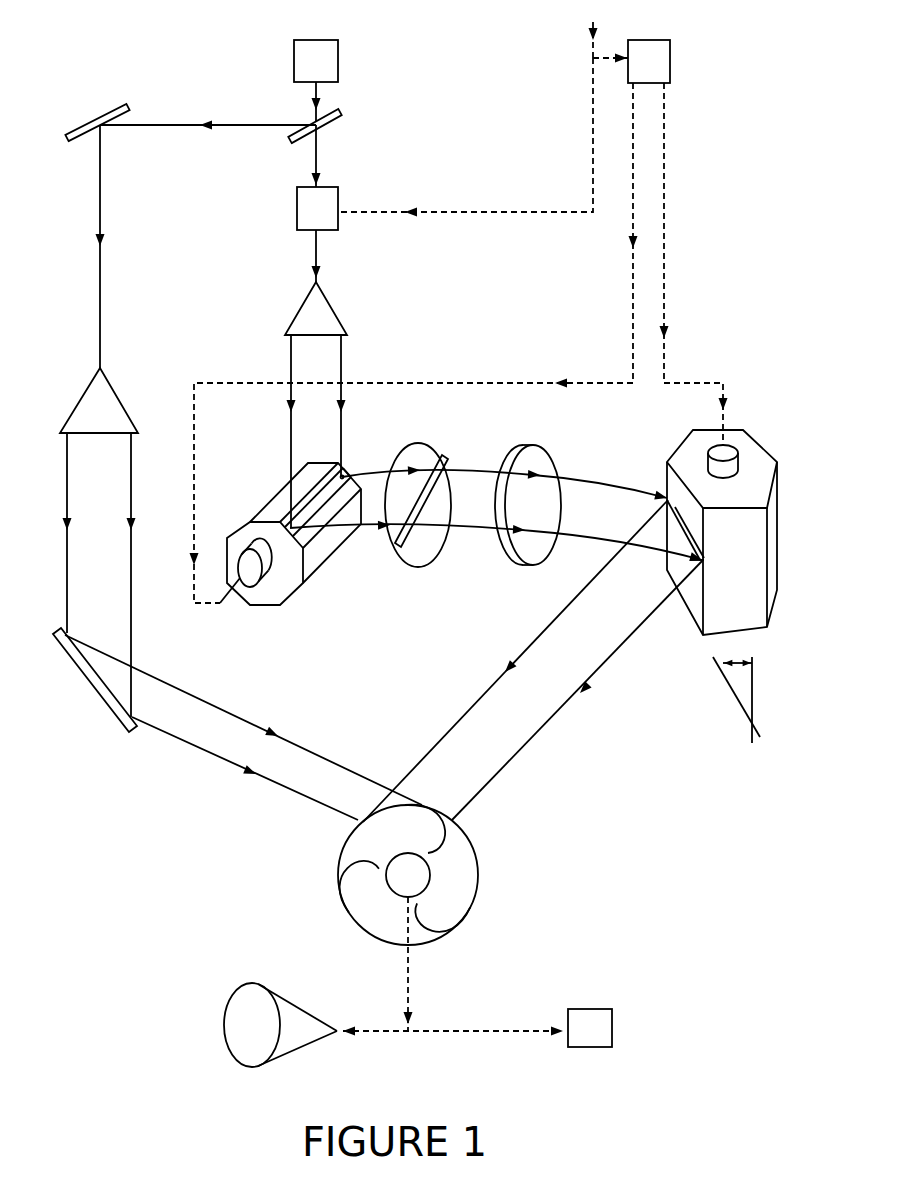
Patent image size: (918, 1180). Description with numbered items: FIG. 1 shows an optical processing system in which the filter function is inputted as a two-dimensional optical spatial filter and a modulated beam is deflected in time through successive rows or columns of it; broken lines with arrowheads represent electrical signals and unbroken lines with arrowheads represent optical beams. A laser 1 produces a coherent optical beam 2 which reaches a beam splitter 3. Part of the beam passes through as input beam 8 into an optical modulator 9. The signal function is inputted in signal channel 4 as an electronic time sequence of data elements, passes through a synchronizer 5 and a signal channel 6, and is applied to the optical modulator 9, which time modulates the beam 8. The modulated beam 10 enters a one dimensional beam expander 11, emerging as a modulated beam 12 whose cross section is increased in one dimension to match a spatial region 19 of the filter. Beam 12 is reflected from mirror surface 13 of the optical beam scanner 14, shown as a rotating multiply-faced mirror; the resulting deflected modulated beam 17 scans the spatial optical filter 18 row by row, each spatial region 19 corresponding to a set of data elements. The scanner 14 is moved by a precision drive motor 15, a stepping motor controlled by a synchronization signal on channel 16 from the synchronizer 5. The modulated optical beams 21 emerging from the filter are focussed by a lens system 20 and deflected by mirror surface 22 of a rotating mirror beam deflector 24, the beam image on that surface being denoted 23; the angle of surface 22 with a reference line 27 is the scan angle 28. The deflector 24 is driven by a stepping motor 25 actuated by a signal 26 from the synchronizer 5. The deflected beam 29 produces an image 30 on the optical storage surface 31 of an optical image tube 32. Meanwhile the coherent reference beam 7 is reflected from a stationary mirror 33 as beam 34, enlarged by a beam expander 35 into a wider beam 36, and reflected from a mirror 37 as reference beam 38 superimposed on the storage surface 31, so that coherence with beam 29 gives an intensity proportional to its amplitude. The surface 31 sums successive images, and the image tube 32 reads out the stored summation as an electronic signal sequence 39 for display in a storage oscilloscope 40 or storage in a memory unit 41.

The laser 1 is at (325, 61).
The coherent optical beam 2 is at (305, 102).
The beam splitter 3 is at (319, 127).
The signal channel 4 is at (609, 33).
The synchronizer 5 is at (649, 61).
The signal channel 6 is at (465, 137).
The coherent reference beam 7 is at (208, 112).
The input beam 8 is at (324, 156).
The optical modulator 9 is at (317, 208).
The modulated beam 10 is at (330, 256).
The one dimensional beam expander 11 is at (319, 308).
The modulated beam 12 is at (312, 431).
The mirror surface 13 is at (318, 502).
The optical beam scanner 14 is at (290, 534).
The precision drive motor 15 is at (269, 562).
The synchronization signal channel 16 is at (414, 343).
The deflected modulated beam 17 is at (411, 505).
The spatial optical filter 18 is at (418, 492).
The spatial region 19 is at (441, 462).
The lens system 20 is at (528, 518).
The modulated optical beams 21 is at (608, 514).
The mirror surface 22 is at (668, 573).
The beam image 23 is at (666, 497).
The rotating mirror beam deflector 24 is at (722, 532).
The stepping motor 25 is at (748, 450).
The signal 26 is at (694, 264).
The reference line 27 is at (748, 689).
The scan angle 28 is at (745, 680).
The deflected beam 29 is at (533, 661).
The image 30 is at (400, 859).
The optical storage surface 31 is at (420, 875).
The optical image tube 32 is at (408, 875).
The stationary mirror 33 is at (97, 118).
The reflected reference beam 34 is at (82, 246).
The beam expander 35 is at (100, 400).
The wider beam 36 is at (96, 575).
The mirror 37 is at (94, 680).
The reference beam 38 is at (243, 727).
The electronic signal sequence 39 is at (453, 966).
The storage oscilloscope 40 is at (280, 1024).
The memory unit 41 is at (590, 1028).